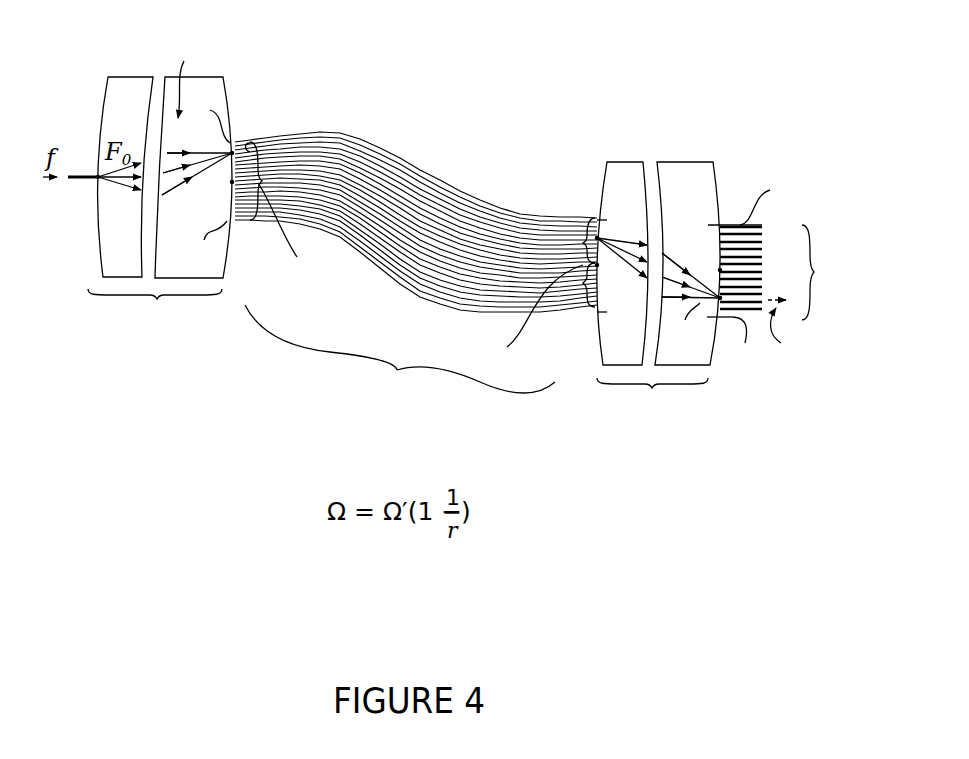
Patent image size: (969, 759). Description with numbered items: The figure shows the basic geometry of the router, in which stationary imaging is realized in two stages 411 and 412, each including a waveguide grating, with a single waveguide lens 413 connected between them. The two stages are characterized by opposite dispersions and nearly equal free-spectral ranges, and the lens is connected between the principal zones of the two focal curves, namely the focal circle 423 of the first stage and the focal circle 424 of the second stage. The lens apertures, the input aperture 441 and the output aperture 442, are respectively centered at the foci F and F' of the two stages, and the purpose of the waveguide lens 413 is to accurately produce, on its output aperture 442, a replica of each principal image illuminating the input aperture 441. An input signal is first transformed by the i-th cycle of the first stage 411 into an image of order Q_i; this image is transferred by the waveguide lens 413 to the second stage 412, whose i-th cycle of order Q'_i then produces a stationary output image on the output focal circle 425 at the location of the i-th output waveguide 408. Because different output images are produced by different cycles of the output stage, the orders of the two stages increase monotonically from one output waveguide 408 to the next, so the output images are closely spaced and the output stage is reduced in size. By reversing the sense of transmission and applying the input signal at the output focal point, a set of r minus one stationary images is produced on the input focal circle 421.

The output waveguides 408 is at (757, 317).
The first stage 411 is at (156, 320).
The second stage 412 is at (654, 415).
The waveguide lens 413 is at (416, 283).
The input focal circle 421 is at (101, 108).
The focal circle of the first stage 423 is at (230, 92).
The focal circle of the second stage 424 is at (605, 172).
The output focal circle 425 is at (717, 172).
The input aperture of the waveguide lens 441 is at (288, 223).
The output aperture of the waveguide lens 442 is at (584, 233).